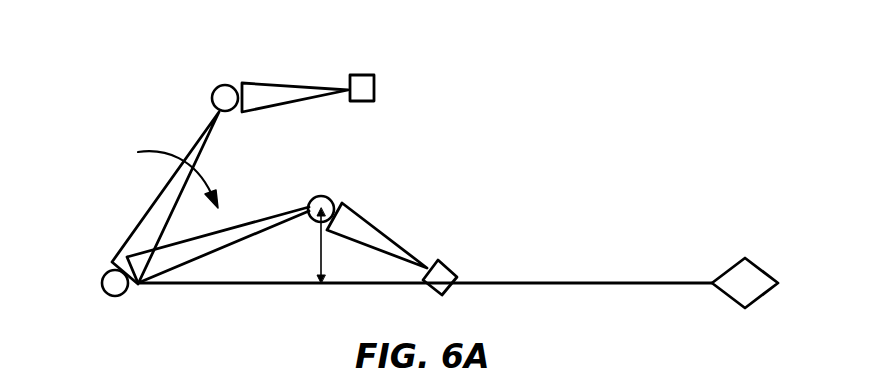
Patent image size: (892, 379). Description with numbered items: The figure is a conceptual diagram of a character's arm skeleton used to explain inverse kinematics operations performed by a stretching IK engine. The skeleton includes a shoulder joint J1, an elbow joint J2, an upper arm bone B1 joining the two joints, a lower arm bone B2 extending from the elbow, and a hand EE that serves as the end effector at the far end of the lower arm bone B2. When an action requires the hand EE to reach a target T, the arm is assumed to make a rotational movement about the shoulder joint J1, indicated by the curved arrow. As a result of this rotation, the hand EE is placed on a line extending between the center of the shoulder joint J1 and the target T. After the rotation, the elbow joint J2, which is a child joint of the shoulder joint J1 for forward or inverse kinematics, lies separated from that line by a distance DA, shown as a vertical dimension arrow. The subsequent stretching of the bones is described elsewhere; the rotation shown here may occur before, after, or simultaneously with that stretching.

The shoulder joint J1 is at (108, 285).
The elbow joint J2 is at (225, 100).
The upper arm bone B1 is at (158, 200).
The lower arm bone B2 is at (272, 92).
The hand EE is at (362, 90).
The distance DA is at (305, 245).
The target T is at (743, 283).